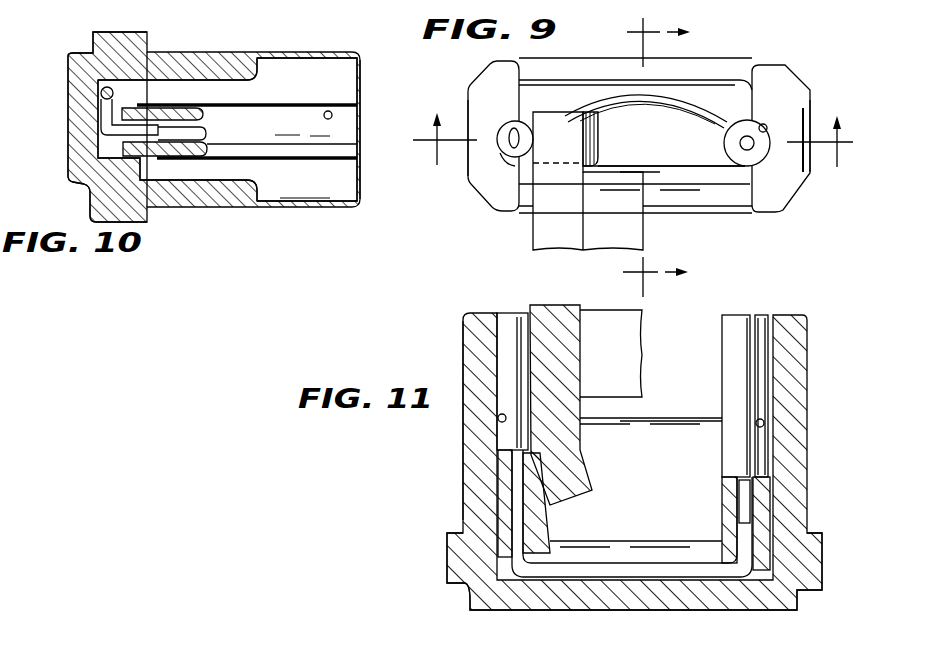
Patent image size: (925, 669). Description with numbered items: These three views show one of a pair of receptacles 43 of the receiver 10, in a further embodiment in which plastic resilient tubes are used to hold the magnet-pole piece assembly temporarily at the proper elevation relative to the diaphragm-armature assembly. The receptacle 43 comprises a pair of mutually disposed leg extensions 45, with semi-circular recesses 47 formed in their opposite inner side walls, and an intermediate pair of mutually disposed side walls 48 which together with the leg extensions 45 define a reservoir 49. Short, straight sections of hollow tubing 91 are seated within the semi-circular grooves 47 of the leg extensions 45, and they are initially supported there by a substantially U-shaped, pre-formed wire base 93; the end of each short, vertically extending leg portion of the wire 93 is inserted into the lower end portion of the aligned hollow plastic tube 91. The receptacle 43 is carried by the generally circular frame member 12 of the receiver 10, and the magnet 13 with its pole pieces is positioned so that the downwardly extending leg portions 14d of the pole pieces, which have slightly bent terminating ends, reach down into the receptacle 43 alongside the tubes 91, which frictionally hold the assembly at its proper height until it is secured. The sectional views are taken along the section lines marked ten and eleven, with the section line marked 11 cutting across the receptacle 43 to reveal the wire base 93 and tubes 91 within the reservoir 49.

In FIG. 10, the frame member 12 is at (95, 38).
In FIG. 11, the frame member 12 is at (447, 557).
In FIG. 9, the magnet 13 is at (595, 222).
In FIG. 11, the magnet 13 is at (624, 352).
In FIG. 9, the downwardly extending leg portions 14d is at (573, 143).
In FIG. 11, the downwardly extending leg portions 14d is at (568, 468).
In FIG. 10, the receptacle 43 is at (374, 194).
In FIG. 9, the receptacle 43 is at (735, 245).
In FIG. 11, the receptacle 43 is at (476, 298).
In FIG. 10, the leg extensions 45 is at (297, 190).
In FIG. 9, the leg extensions 45 is at (490, 86).
In FIG. 11, the leg extensions 45 is at (477, 488).
In FIG. 10, the semi-circular recesses 47 is at (329, 110).
In FIG. 9, the semi-circular recesses 47 is at (762, 122).
In FIG. 11, the semi-circular recesses 47 is at (503, 423).
In FIG. 10, the side walls 48 is at (226, 64).
In FIG. 9, the side walls 48 is at (730, 72).
In FIG. 11, the side walls 48 is at (653, 428).
In FIG. 10, the reservoir 49 is at (256, 93).
In FIG. 9, the reservoir 49 is at (658, 180).
In FIG. 11, the reservoir 49 is at (696, 417).
In FIG. 10, the hollow tubing 91 is at (302, 121).
In FIG. 9, the hollow tubing 91 is at (523, 118).
In FIG. 11, the hollow tubing 91 is at (506, 351).
In FIG. 10, the wire base 93 is at (108, 113).
In FIG. 9, the wire base 93 is at (690, 118).
In FIG. 11, the wire base 93 is at (667, 578).
In FIG. 9, the armature receiver unit 10 is at (670, 157).
In FIG. 9, the section line 11- 11 is at (633, 127).